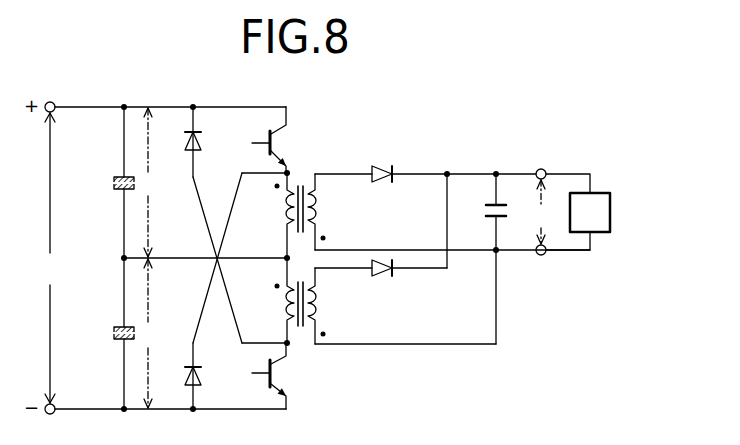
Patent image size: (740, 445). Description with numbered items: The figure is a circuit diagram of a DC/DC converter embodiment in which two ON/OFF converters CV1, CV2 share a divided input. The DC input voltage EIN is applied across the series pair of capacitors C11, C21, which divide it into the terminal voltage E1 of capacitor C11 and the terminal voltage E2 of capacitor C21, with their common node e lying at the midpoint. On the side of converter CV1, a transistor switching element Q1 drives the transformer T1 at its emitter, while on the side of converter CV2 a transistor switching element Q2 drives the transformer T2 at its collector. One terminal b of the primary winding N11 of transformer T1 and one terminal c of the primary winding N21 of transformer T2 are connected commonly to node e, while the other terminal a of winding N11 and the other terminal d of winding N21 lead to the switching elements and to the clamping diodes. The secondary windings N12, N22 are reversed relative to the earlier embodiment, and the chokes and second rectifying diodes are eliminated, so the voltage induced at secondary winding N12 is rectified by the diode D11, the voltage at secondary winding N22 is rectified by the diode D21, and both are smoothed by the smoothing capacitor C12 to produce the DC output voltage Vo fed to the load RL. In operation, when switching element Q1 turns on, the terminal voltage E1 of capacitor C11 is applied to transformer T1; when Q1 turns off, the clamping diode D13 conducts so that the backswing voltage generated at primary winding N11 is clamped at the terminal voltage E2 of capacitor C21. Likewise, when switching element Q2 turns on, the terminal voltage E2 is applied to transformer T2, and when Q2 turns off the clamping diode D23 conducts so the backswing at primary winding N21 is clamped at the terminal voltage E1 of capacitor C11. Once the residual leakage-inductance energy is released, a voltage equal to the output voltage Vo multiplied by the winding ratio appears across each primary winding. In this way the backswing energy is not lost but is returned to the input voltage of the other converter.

The DC input voltage EIN is at (50, 258).
The node of capacitors C11 and C21 e is at (132, 268).
The capacitor C11 is at (109, 182).
The capacitor C21 is at (109, 333).
The terminal voltage of capacitor C11 E1 is at (153, 182).
The terminal voltage of capacitor C21 E2 is at (153, 333).
The clamping diode D23 is at (213, 225).
The clamping diode D13 is at (213, 291).
The switching element Q1 is at (279, 149).
The switching element Q2 is at (282, 376).
The transformer T1 is at (300, 198).
The transformer T2 is at (300, 295).
The primary winding of transformer T1 N11 is at (267, 215).
The secondary winding of transformer T1 N12 is at (331, 212).
The primary winding of transformer T2 N21 is at (267, 300).
The secondary winding of transformer T2 N22 is at (331, 306).
The terminal of primary winding N11 a is at (285, 172).
The terminal of primary winding N11 b is at (285, 256).
The terminal of primary winding N21 c is at (285, 270).
The terminal of primary winding N21 d is at (285, 341).
The converter CV1 is at (309, 166).
The converter CV2 is at (304, 347).
The diode D11 is at (425, 183).
The diode D21 is at (381, 235).
The smoothing capacitor C12 is at (479, 259).
The DC output voltage Vo is at (540, 212).
The load RL is at (578, 212).